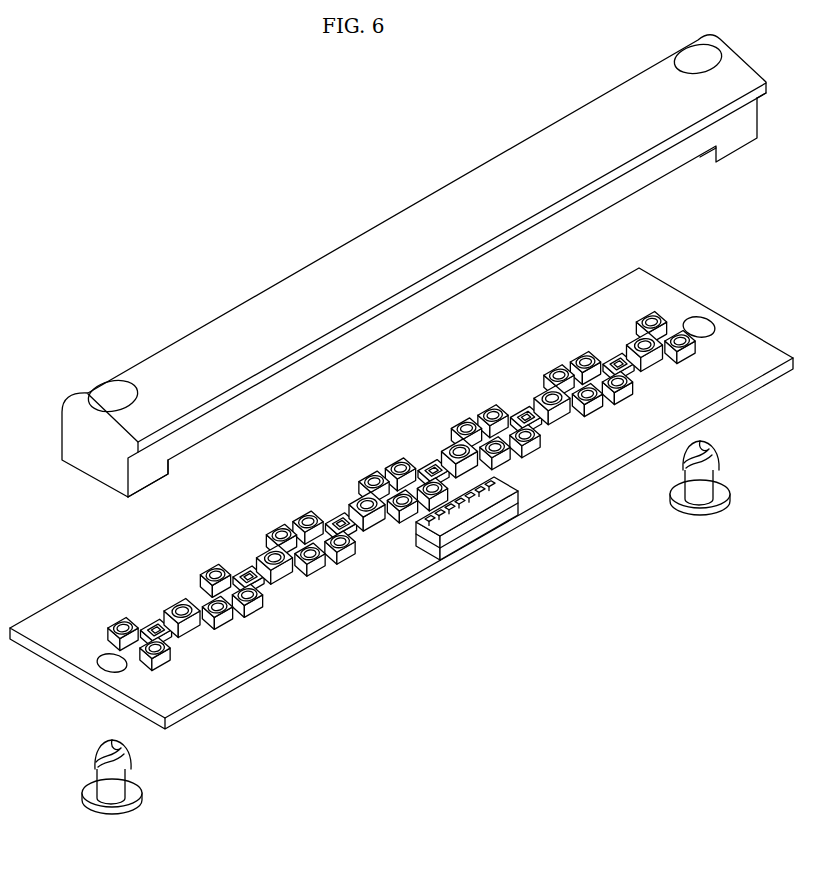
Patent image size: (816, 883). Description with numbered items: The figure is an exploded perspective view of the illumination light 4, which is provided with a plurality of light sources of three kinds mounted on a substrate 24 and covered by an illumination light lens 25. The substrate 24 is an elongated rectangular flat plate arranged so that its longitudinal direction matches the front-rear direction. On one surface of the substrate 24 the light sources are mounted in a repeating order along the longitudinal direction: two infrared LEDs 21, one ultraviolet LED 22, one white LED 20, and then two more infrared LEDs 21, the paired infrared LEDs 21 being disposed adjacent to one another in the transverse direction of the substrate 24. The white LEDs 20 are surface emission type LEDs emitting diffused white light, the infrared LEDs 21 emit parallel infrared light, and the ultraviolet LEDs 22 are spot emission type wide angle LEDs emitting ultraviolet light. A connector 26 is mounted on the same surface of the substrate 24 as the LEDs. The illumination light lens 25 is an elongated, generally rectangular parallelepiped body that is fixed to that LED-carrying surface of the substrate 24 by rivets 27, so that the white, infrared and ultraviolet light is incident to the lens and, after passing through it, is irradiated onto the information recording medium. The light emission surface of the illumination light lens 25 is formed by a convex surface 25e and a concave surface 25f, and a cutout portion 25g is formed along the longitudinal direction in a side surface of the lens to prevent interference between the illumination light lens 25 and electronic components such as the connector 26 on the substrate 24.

The illumination light 4 is at (181, 174).
The white LED 20 is at (413, 492).
The infrared LED 21 is at (120, 620).
The ultraviolet LED 22 is at (156, 622).
The substrate 24 is at (313, 643).
The illumination light lens 25 is at (362, 233).
The convex surface 25e is at (218, 333).
The concave surface 25f is at (740, 81).
The cutout portion 25g is at (139, 473).
The connector 26 is at (455, 562).
The rivet 27 is at (110, 814).